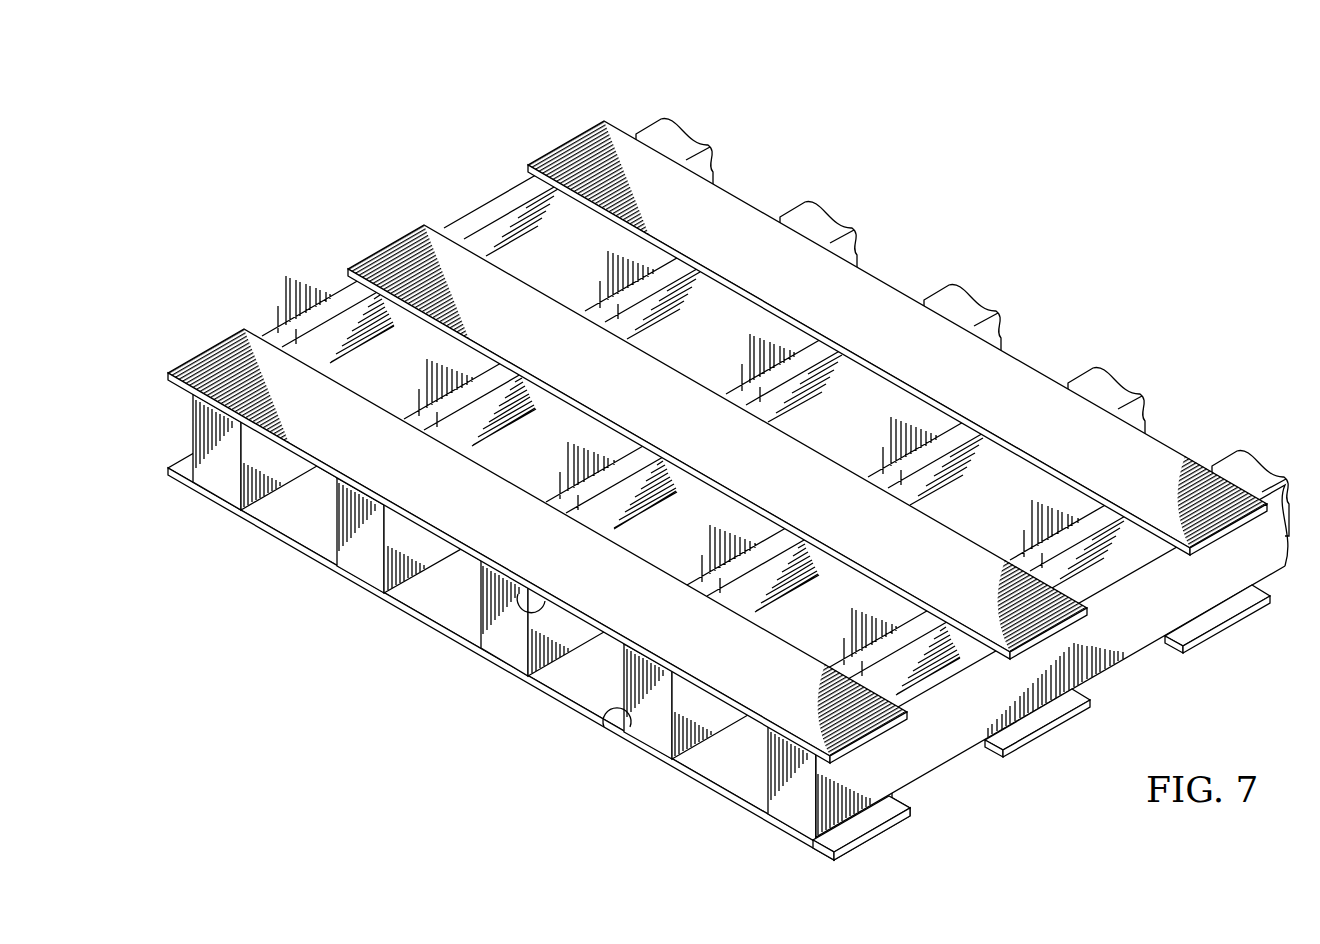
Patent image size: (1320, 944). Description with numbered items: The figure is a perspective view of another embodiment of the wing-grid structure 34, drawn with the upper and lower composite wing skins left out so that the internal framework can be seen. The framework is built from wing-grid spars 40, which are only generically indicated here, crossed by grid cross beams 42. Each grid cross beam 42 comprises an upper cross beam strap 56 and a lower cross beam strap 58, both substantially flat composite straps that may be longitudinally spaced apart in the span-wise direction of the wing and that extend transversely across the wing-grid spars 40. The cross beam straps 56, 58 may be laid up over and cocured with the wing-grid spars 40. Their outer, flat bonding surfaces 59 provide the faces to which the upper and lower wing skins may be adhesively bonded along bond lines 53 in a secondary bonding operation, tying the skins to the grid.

The wing-grid structure 34 is at (993, 207).
The wing-grid spars 40 is at (191, 437).
The grid cross beams 42 is at (423, 623).
The bond lines 53 is at (548, 600).
The upper cross beam strap 56 is at (640, 124).
The lower cross beam strap 58 is at (870, 838).
The bonding surfaces 59 is at (458, 458).